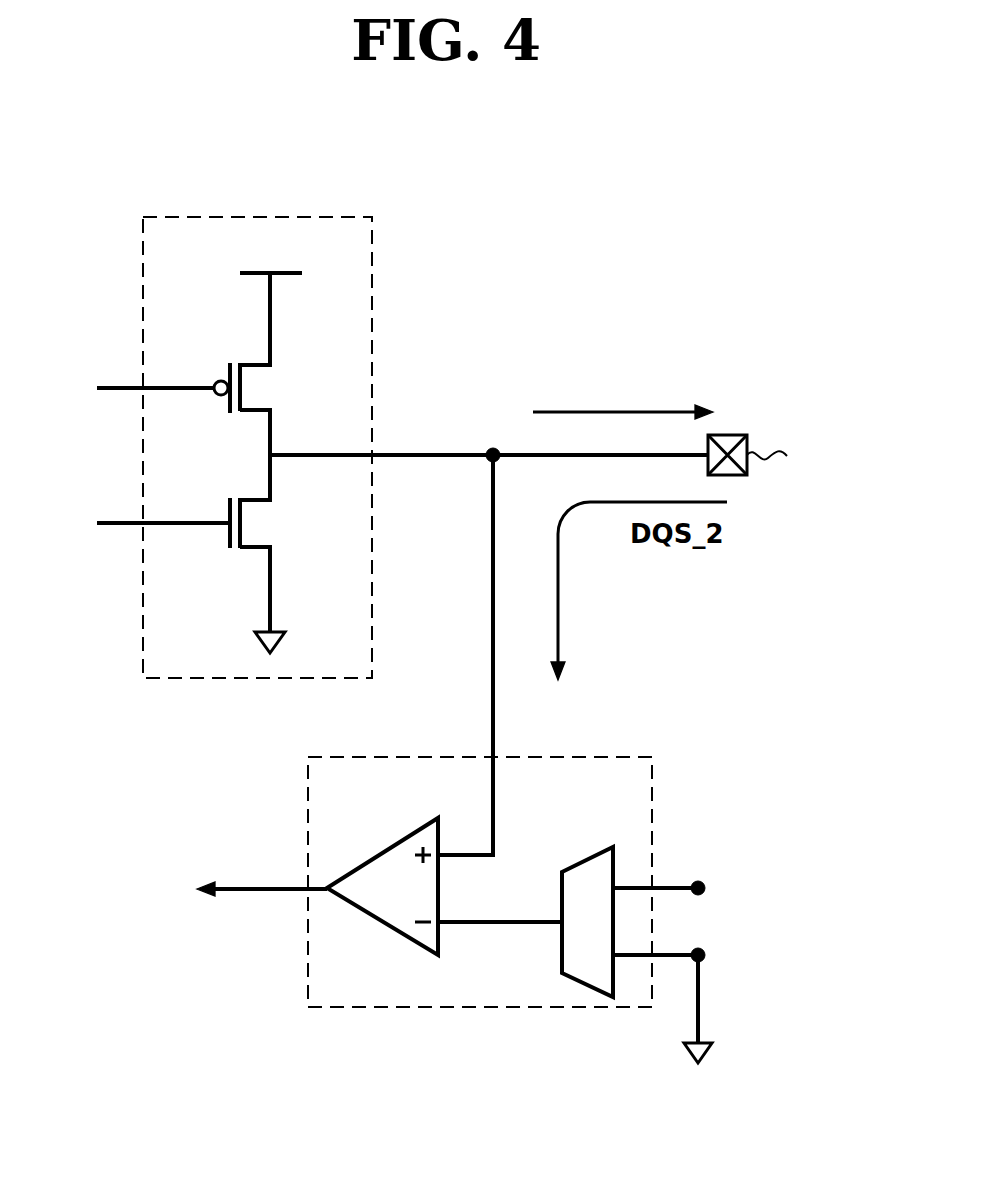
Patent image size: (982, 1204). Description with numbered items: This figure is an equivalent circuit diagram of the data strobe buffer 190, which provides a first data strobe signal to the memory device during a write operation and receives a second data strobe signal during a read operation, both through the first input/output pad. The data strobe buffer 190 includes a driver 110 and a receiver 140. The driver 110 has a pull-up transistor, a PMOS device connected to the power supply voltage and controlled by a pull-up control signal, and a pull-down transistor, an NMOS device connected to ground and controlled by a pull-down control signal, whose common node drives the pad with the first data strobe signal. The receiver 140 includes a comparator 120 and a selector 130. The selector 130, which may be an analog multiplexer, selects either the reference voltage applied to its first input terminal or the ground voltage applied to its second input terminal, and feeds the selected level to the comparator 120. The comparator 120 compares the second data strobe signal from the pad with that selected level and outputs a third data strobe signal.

The driver 110 is at (336, 217).
The comparator 120 is at (382, 853).
The selector 130 is at (566, 868).
The receiver 140 is at (602, 757).
The data strobe buffer 190 is at (753, 332).